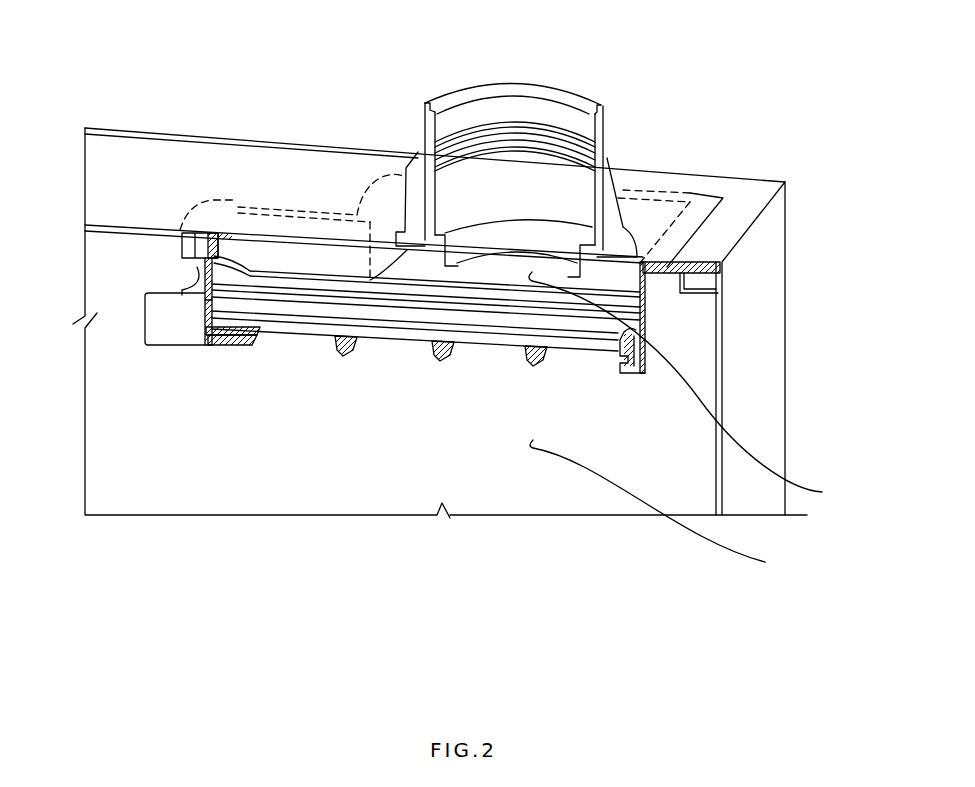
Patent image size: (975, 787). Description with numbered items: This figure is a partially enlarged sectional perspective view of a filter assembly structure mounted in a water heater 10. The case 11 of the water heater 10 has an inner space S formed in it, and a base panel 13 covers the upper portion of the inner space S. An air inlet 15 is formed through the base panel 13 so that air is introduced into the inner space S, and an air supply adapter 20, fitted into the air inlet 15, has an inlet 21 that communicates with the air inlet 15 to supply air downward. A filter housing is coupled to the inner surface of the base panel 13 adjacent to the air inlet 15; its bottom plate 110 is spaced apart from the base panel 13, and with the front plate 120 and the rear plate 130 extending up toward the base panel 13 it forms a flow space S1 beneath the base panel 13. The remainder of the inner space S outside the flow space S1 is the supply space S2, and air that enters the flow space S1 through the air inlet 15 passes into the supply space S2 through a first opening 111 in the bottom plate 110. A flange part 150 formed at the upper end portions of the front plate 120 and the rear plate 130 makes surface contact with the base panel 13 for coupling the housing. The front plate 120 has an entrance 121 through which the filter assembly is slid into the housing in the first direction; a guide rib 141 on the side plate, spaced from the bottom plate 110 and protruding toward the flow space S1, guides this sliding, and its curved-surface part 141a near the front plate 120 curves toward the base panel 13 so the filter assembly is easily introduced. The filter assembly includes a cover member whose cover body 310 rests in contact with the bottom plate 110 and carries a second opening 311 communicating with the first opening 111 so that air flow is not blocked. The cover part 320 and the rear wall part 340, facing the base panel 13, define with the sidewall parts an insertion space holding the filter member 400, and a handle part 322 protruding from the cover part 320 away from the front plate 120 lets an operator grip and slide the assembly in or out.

The water heater 10 is at (857, 370).
The case 11 is at (775, 377).
The base panel 13 is at (702, 197).
The air inlet 15 is at (593, 227).
The air supply adapter 20 is at (605, 148).
The inlet 21 is at (630, 247).
The bottom plate 110 is at (242, 348).
The first opening 111 is at (355, 360).
The front plate 120 is at (200, 262).
The entrance 121 is at (203, 286).
The rear plate 130 is at (648, 295).
The guide rib 141 is at (518, 300).
The curved-surface part 141a is at (250, 276).
The flange part 150 is at (182, 243).
The cover body 310 is at (256, 341).
The second opening 311 is at (352, 352).
The cover part 320 is at (205, 335).
The handle part 322 is at (160, 338).
The rear wall part 340 is at (626, 340).
The filter member 400 is at (477, 339).
The flow space S1 is at (690, 390).
The supply space S2 is at (663, 507).
The inner space S is at (853, 500).